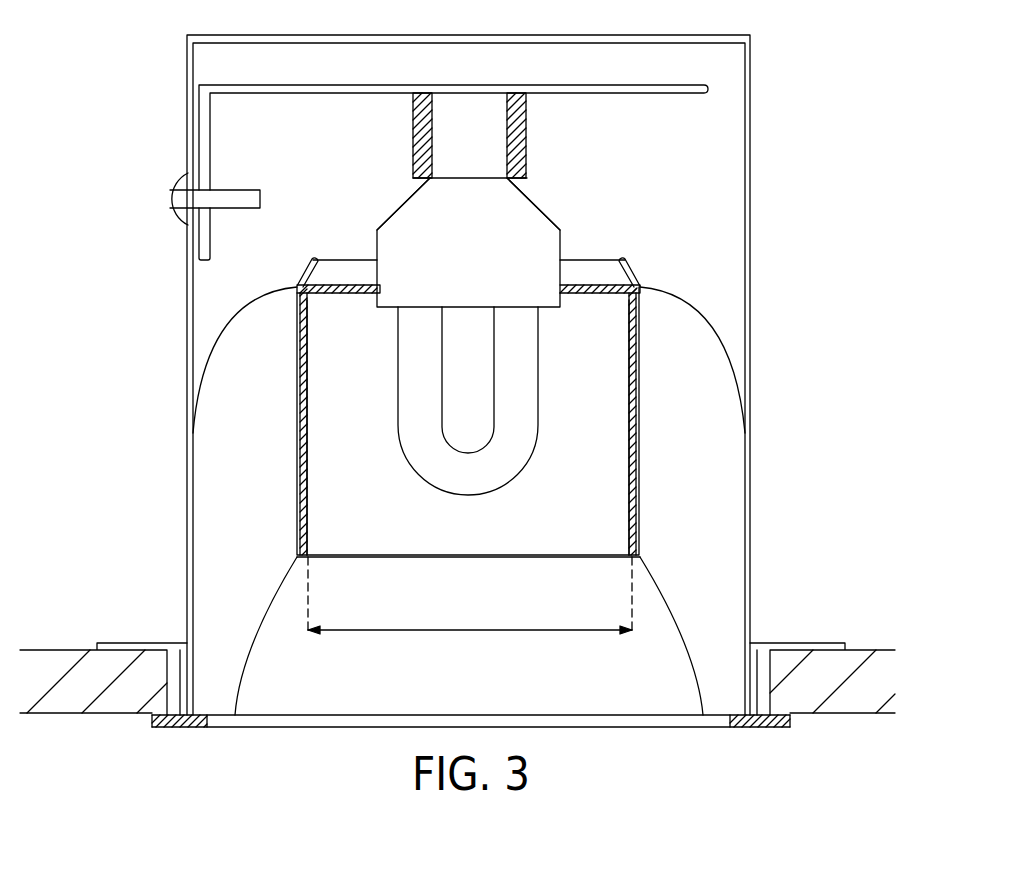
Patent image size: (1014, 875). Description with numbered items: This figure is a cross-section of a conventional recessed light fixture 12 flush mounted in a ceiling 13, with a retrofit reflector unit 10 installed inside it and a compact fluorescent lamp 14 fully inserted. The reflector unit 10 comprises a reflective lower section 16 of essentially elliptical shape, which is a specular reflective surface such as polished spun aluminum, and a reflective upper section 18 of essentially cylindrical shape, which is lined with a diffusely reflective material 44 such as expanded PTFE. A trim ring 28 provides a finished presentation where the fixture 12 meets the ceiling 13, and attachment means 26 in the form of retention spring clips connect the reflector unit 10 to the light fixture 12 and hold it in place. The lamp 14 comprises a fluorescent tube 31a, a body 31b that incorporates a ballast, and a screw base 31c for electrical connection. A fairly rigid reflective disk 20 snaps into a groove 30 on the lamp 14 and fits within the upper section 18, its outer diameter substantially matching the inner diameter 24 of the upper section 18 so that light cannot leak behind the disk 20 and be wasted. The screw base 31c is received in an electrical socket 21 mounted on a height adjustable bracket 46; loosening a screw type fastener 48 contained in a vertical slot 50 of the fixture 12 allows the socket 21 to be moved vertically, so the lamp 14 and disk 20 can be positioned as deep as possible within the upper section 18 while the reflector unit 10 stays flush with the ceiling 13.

The reflector unit 10 is at (636, 455).
The recessed light fixture 12 is at (793, 117).
The ceiling 13 is at (110, 714).
The compact fluorescent lamp 14 is at (412, 222).
The lower section 16 is at (257, 650).
The upper section 18 is at (297, 425).
The reflective disk 20 is at (333, 295).
The electrical socket 21 is at (413, 122).
The inner diameter 24 is at (458, 631).
The attachment means 26 is at (217, 352).
The trim ring 28 is at (180, 728).
The groove 30 is at (382, 288).
The fluorescent tube 31a is at (505, 470).
The body 31b is at (540, 226).
The screw base 31c is at (487, 138).
The diffusely reflective material 44 is at (306, 515).
The height adjustable bracket 46 is at (320, 86).
The screw type fastener 48 is at (228, 203).
The vertical slot 50 is at (212, 173).